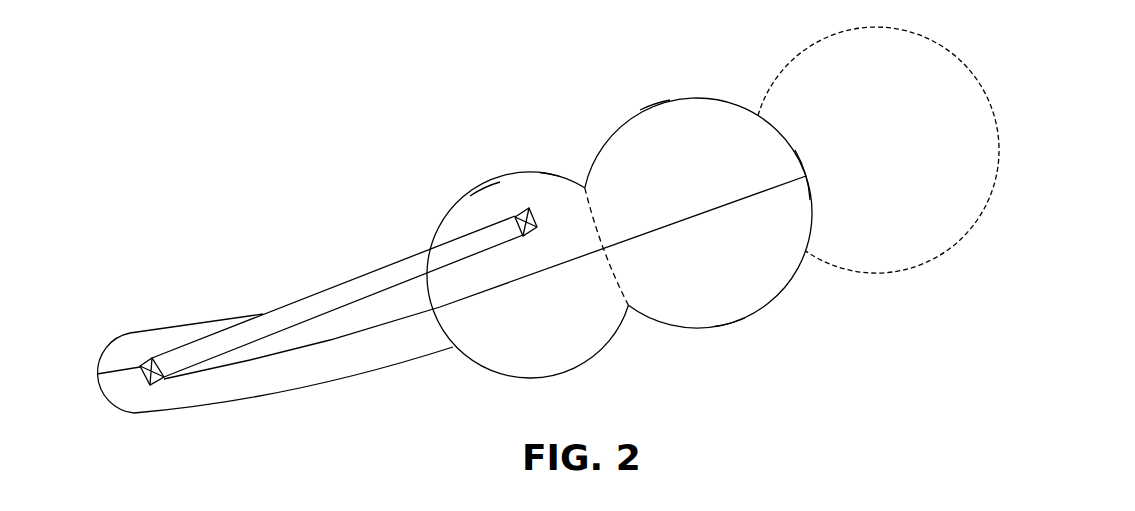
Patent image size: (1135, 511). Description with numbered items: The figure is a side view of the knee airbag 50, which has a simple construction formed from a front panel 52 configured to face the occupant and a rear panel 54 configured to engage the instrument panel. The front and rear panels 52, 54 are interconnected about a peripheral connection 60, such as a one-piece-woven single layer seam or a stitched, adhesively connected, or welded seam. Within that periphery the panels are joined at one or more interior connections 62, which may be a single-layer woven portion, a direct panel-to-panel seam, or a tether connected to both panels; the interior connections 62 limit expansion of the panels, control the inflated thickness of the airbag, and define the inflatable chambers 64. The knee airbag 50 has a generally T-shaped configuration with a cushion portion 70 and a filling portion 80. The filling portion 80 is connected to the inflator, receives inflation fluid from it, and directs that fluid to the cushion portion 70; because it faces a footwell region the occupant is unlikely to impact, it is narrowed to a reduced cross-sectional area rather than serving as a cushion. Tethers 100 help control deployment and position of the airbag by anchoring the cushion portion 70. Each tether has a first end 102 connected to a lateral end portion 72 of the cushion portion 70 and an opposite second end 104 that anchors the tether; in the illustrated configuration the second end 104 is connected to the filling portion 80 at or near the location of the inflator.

The knee airbag 50 is at (316, 168).
The front panel 52 is at (733, 326).
The rear panel 54 is at (550, 171).
The peripheral connection 60 is at (502, 287).
The interior connection 62 is at (600, 224).
The inflatable chamber 64 is at (497, 206).
The cushion portion 70 is at (645, 368).
The lateral end portion 72 is at (750, 262).
The filling portion 80 is at (284, 426).
The tether 100 is at (333, 296).
The first end 102 is at (500, 228).
The second end 104 is at (187, 362).